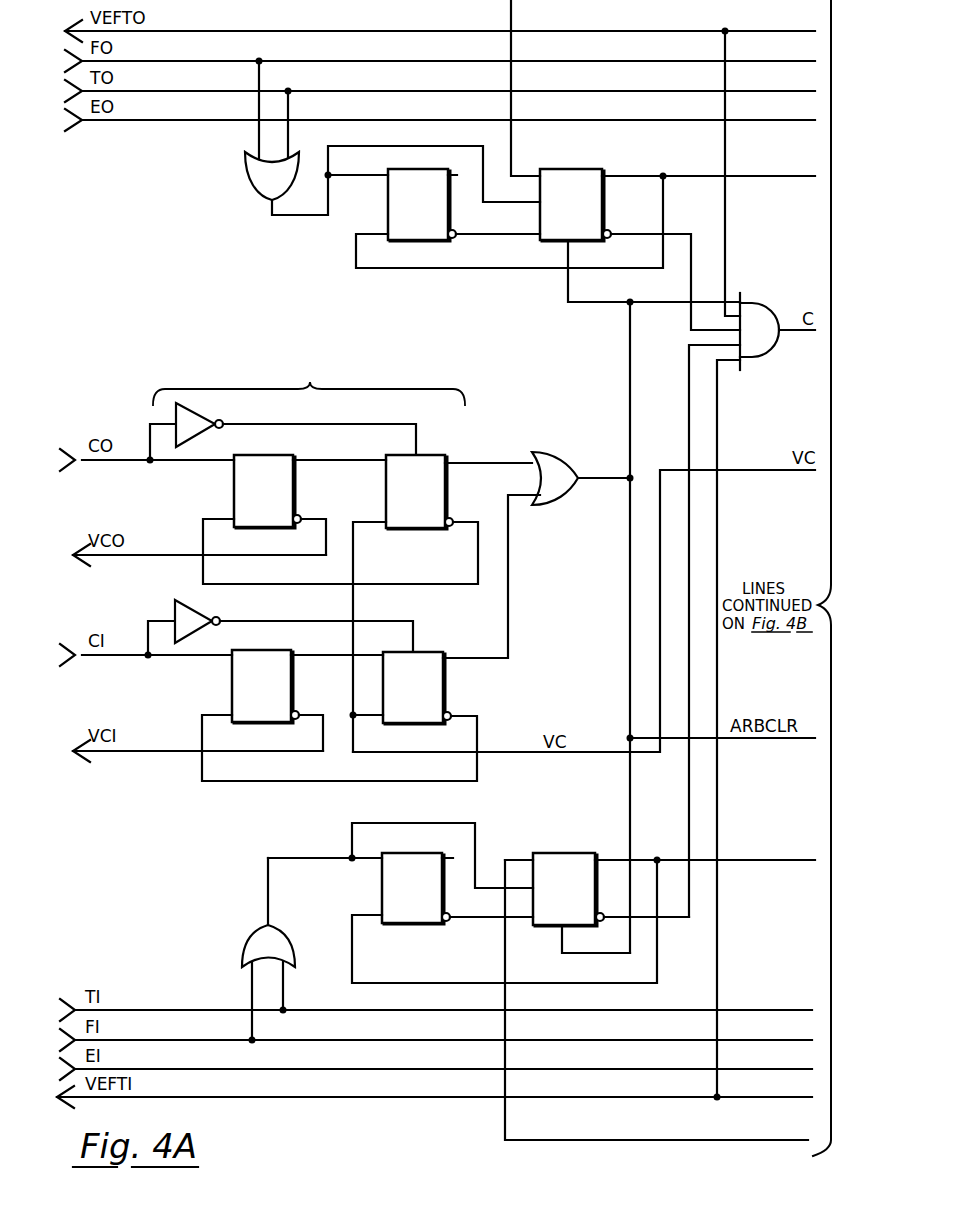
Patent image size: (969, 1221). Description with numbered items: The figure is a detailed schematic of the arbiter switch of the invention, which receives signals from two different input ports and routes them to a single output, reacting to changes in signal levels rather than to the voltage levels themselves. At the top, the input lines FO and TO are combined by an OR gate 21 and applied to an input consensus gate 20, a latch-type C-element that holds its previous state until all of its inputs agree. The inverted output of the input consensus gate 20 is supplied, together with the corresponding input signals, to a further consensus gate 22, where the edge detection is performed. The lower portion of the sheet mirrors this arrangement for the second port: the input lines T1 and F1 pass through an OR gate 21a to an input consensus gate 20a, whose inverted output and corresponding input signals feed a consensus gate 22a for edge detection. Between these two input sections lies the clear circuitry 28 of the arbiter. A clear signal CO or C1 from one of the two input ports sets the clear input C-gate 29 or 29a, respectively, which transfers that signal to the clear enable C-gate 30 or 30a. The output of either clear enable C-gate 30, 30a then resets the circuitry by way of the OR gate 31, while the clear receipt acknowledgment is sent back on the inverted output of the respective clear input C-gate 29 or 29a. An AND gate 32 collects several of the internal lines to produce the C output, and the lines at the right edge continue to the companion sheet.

The input consensus gate 20 is at (386, 204).
The OR gate 21 is at (252, 180).
The consensus gate 22 is at (604, 204).
The clear circuitry 28 is at (306, 510).
The clear input C-gate 29 is at (228, 492).
The clear enable C-gate 30 is at (448, 494).
The OR gate 31 is at (556, 461).
The AND gate 32 is at (768, 314).
The clear input C-gate 29a is at (228, 689).
The clear enable C-gate 30a is at (446, 691).
The input consensus gate 20a is at (378, 888).
The OR gate 21a is at (244, 950).
The consensus gate 22a is at (574, 853).